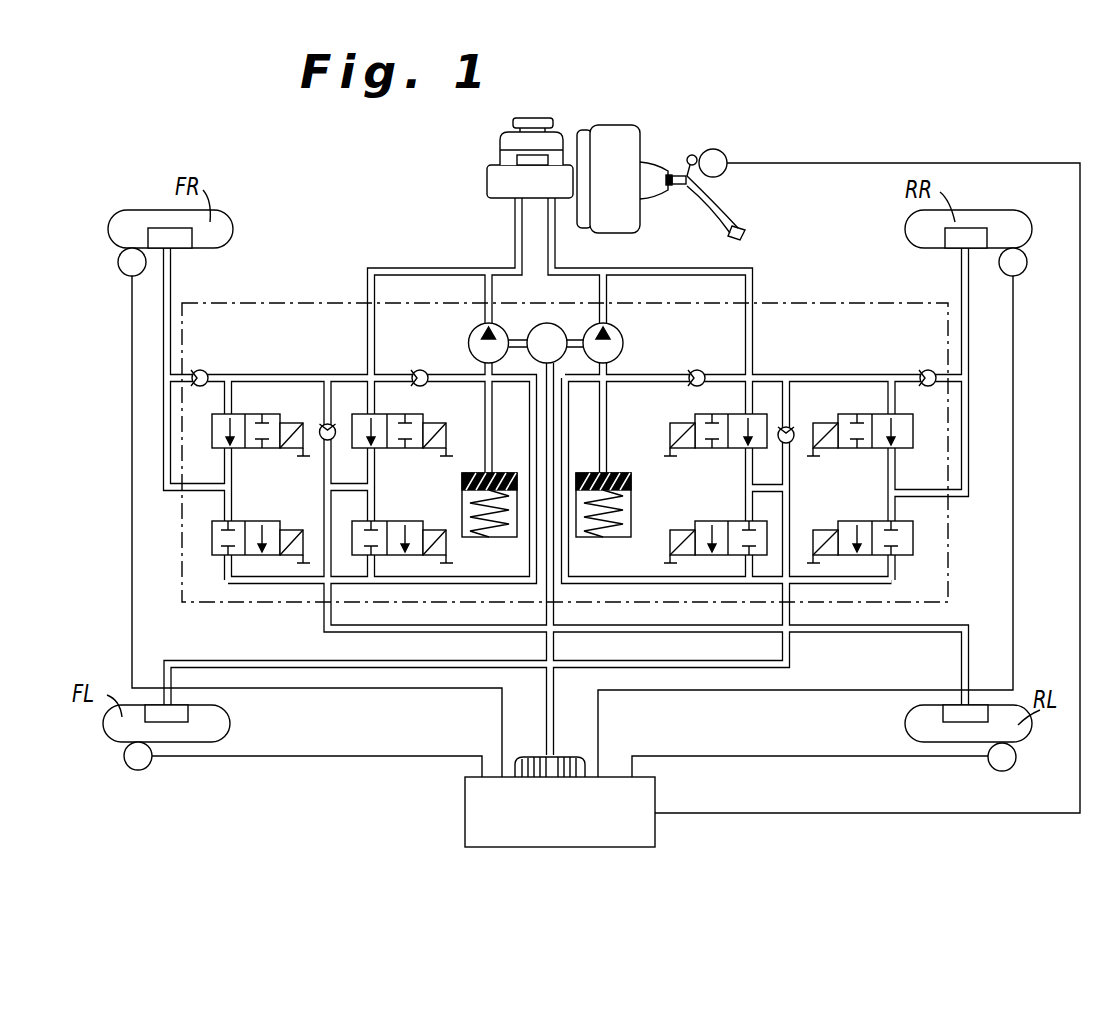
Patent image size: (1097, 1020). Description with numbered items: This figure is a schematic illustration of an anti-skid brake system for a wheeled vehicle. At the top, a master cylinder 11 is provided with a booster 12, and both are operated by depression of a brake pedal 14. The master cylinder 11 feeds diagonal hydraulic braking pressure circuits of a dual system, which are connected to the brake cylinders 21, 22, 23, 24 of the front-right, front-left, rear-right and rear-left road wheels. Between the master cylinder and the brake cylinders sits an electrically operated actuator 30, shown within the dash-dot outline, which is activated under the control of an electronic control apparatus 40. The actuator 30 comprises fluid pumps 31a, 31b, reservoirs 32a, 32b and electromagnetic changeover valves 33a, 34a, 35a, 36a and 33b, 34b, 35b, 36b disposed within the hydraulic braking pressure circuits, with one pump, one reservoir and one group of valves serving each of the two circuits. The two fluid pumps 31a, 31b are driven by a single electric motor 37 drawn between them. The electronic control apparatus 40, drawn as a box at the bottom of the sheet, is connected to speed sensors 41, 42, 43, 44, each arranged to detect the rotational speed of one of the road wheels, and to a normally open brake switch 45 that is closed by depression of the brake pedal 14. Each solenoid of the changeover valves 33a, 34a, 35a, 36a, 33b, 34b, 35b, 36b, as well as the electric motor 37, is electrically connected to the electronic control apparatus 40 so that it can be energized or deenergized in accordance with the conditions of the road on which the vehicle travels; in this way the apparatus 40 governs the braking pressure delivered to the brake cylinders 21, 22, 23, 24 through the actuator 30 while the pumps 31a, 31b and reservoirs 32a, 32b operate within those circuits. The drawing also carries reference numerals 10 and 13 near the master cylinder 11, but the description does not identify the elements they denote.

The master cylinder 10 is at (485, 156).
The master cylinder 11 is at (500, 188).
The booster 12 is at (618, 225).
The reservoir 13 is at (508, 140).
The brake pedal 14 is at (737, 233).
The brake cylinder 21 is at (180, 240).
The brake cylinder 22 is at (175, 715).
The brake cylinder 23 is at (960, 240).
The brake cylinder 24 is at (950, 715).
The electrically operated actuator 30 is at (277, 296).
The fluid pump 31a is at (468, 343).
The fluid pump 31b is at (625, 338).
The reservoir 32a is at (472, 537).
The reservoir 32b is at (587, 537).
The electromagnetic changeover valve 33a is at (257, 398).
The electromagnetic changeover valve 33b is at (700, 414).
The electromagnetic changeover valve 34a is at (250, 521).
The electromagnetic changeover valve 34b is at (720, 520).
The electromagnetic changeover valve 35a is at (415, 413).
The electromagnetic changeover valve 35b is at (852, 414).
The electromagnetic changeover valve 36a is at (402, 521).
The electromagnetic changeover valve 36b is at (868, 520).
The electric motor 37 is at (537, 322).
The electronic control apparatus 40 is at (593, 847).
The speed sensor 41 is at (122, 272).
The speed sensor 42 is at (122, 757).
The speed sensor 43 is at (1022, 273).
The speed sensor 44 is at (995, 773).
The brake switch 45 is at (723, 150).